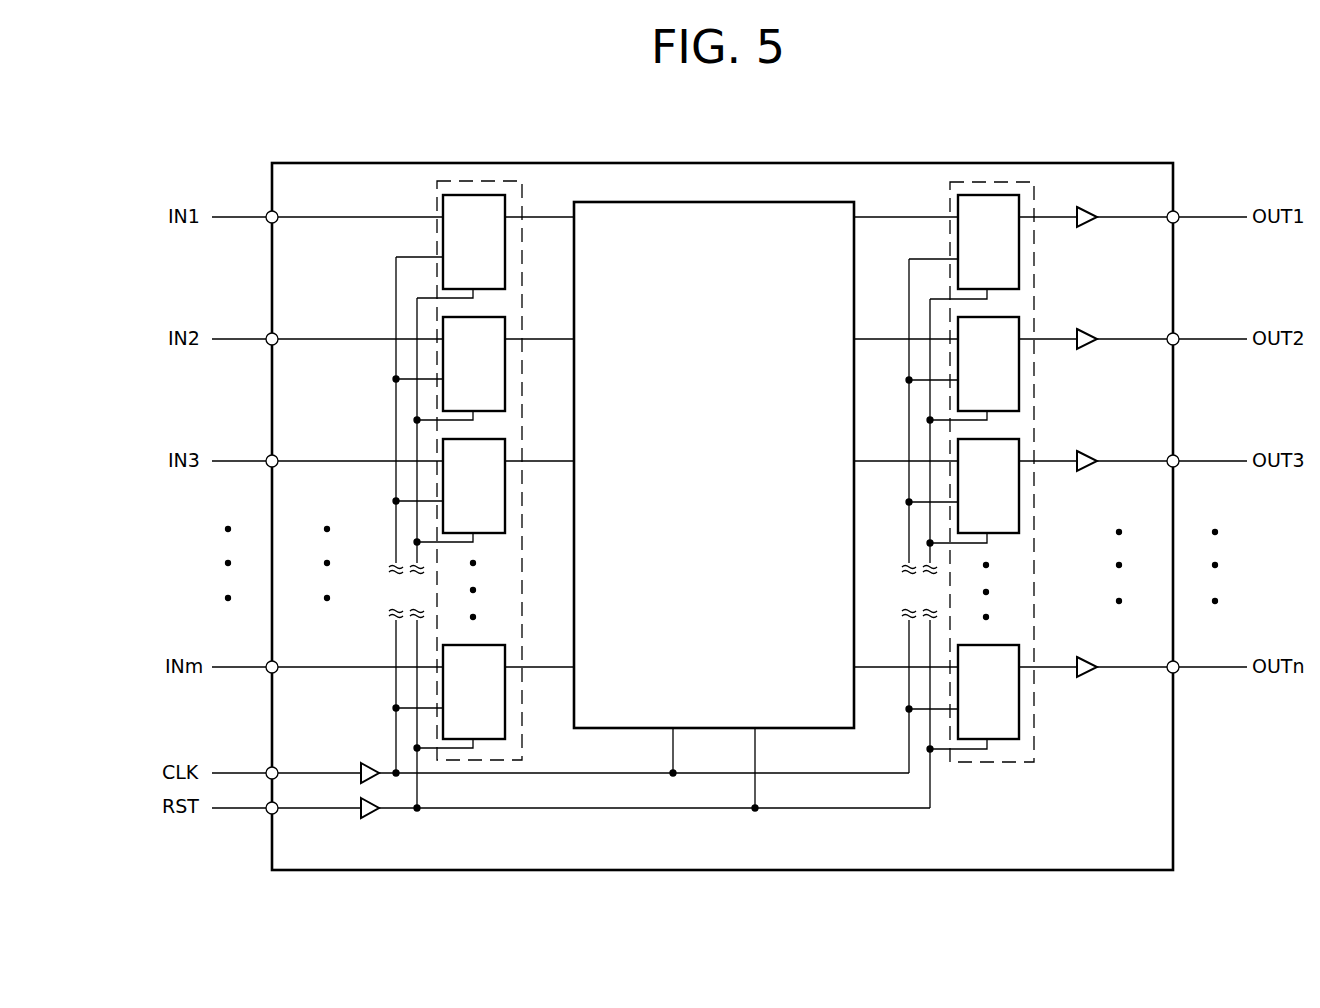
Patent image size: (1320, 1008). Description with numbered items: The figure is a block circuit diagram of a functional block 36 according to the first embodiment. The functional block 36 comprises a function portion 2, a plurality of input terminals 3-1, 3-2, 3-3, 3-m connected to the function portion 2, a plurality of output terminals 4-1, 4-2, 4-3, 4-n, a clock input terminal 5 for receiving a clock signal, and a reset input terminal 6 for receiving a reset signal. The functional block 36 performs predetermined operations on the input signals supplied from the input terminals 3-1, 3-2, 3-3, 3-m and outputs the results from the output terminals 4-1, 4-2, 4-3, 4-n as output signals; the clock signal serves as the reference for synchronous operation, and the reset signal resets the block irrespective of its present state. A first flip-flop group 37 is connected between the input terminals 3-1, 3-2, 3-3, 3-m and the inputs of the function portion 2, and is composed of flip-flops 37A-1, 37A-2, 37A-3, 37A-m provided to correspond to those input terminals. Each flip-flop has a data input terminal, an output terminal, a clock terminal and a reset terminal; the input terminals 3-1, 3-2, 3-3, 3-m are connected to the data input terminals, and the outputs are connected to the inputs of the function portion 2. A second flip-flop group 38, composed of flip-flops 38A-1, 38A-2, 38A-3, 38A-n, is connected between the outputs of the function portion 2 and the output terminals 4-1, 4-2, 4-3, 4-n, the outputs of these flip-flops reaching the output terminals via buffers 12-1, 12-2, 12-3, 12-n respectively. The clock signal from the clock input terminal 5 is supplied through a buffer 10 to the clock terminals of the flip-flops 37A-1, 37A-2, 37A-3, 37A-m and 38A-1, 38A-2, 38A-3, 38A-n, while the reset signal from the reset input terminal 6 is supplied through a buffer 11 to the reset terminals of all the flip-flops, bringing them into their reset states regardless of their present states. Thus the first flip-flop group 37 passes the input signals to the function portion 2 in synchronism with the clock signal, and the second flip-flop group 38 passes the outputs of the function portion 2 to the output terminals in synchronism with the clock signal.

The functional block 36 is at (610, 163).
The function portion 2 is at (857, 207).
The input terminal 3-1 is at (278, 212).
The input terminal 3-2 is at (278, 334).
The input terminal 3-3 is at (278, 456).
The input terminal 3-m is at (278, 662).
The first flip-flop group 37 is at (522, 742).
The flip-flop 37A-1 is at (443, 245).
The flip-flop 37A-2 is at (443, 367).
The flip-flop 37A-3 is at (443, 493).
The flip-flop 37A-m is at (443, 692).
The second flip-flop group 38 is at (993, 762).
The flip-flop 38A-1 is at (1019, 276).
The flip-flop 38A-2 is at (1019, 398).
The flip-flop 38A-3 is at (1019, 518).
The flip-flop 38A-n is at (1019, 729).
The buffer 12-1 is at (1118, 199).
The buffer 12-2 is at (1118, 321).
The buffer 12-3 is at (1118, 443).
The buffer 12-n is at (1118, 649).
The output terminal 4-1 is at (1178, 222).
The output terminal 4-2 is at (1178, 344).
The output terminal 4-3 is at (1178, 466).
The output terminal 4-n is at (1178, 672).
The clock input terminal 5 is at (278, 768).
The reset input terminal 6 is at (278, 813).
The buffer 10 is at (368, 763).
The buffer 11 is at (368, 818).